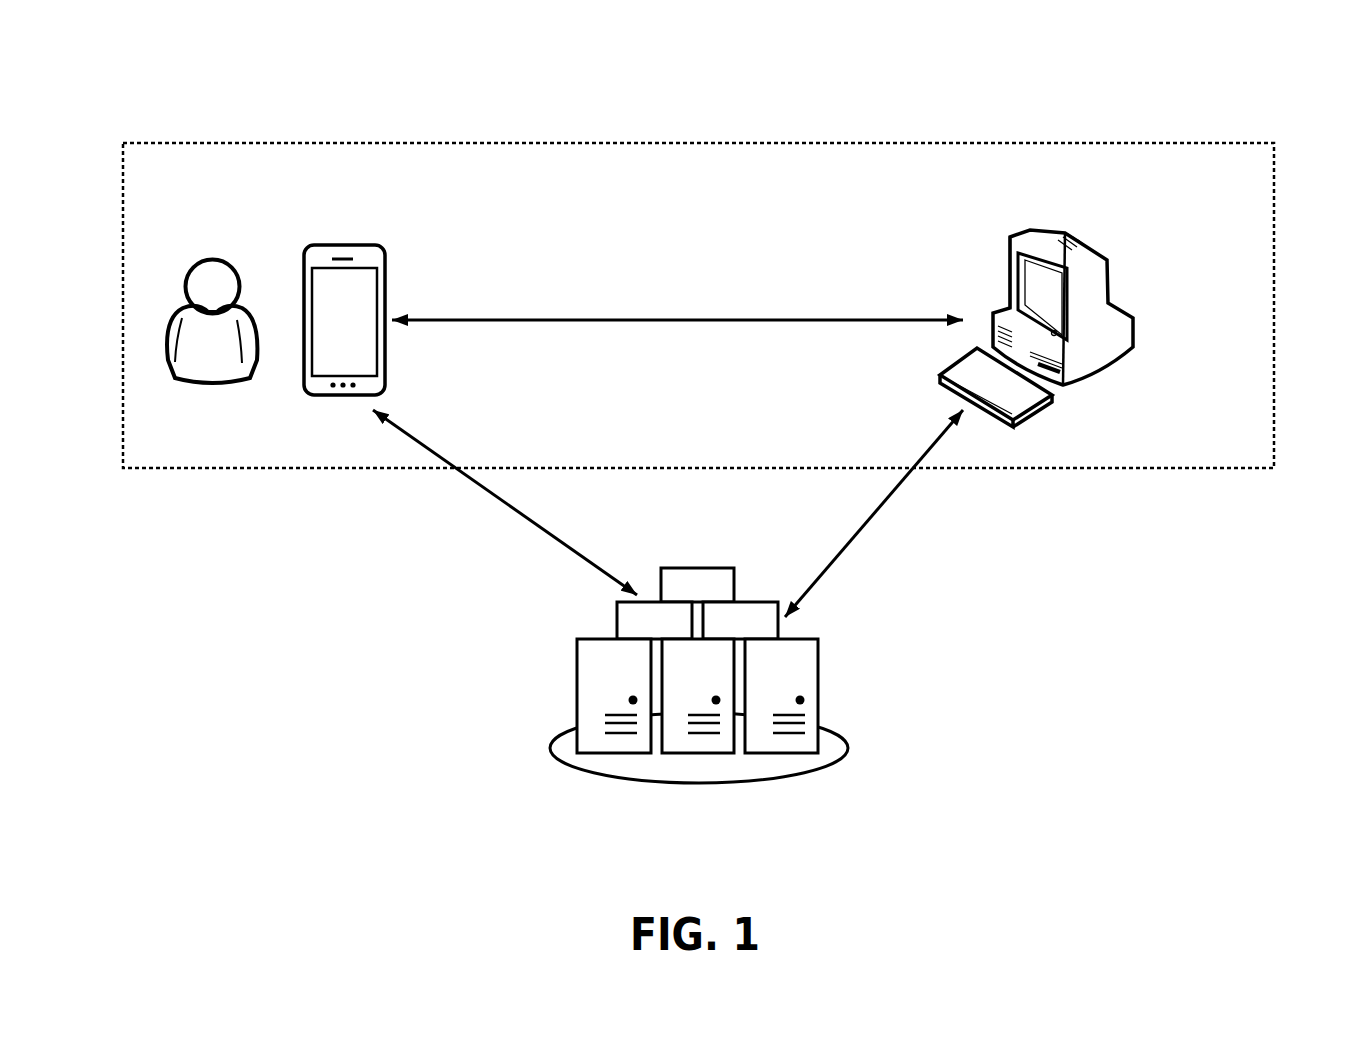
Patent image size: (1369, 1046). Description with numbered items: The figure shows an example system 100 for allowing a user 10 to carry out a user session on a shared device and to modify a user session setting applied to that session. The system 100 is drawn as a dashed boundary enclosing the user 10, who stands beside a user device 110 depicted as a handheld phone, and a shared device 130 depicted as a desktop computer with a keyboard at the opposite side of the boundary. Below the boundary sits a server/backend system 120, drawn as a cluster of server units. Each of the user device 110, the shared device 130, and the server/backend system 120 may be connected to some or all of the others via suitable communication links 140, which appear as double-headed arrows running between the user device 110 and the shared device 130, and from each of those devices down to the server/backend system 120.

The system 100 is at (206, 104).
The user 10 is at (173, 310).
The user device 110 is at (385, 280).
The shared device 130 is at (1108, 270).
The server/backend system 120 is at (817, 673).
The communication links 140 is at (603, 320).